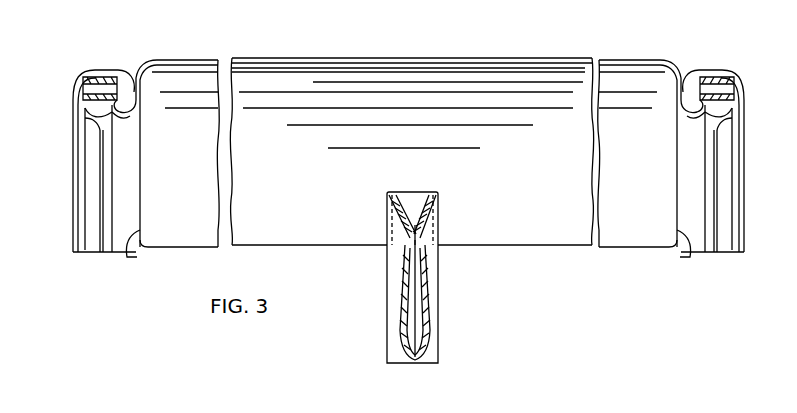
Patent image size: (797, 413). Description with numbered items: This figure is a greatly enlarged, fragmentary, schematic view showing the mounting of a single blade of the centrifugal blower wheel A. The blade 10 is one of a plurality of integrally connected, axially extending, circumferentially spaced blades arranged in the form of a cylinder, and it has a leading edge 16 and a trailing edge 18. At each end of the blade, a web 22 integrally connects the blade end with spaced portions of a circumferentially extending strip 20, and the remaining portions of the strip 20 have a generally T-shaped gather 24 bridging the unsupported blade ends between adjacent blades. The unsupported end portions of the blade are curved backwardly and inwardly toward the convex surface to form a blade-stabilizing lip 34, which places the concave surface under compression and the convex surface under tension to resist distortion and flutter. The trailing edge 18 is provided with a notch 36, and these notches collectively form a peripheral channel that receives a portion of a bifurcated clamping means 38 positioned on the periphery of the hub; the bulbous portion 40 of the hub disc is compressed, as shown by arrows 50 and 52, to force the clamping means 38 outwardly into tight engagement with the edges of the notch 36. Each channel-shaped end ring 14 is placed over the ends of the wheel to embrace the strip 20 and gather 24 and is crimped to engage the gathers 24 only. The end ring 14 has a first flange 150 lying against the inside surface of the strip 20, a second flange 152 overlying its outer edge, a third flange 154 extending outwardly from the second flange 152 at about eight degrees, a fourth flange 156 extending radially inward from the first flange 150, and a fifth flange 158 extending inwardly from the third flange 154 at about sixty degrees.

The blade 10 is at (335, 78).
The leading edge 16 is at (423, 58).
The centrifugal blower wheel A is at (476, 48).
The trailing edge 18 is at (516, 245).
The end ring 14 is at (92, 66).
The web 22 is at (126, 78).
The T-shaped gather 24 is at (76, 82).
The second flange 152 is at (73, 96).
The third flange 154 is at (106, 74).
The fifth flange 158 is at (135, 93).
The circumferentially extending strip 20 is at (130, 120).
The first flange 150 is at (85, 125).
The fourth flange 156 is at (100, 130).
The blade-stabilizing lip 34 is at (130, 252).
The notch 36 is at (414, 194).
The bifurcated clamping means 38 is at (395, 218).
The bulbous portion 40 is at (400, 325).
The arrow 50 is at (398, 286).
The arrow 52 is at (432, 286).